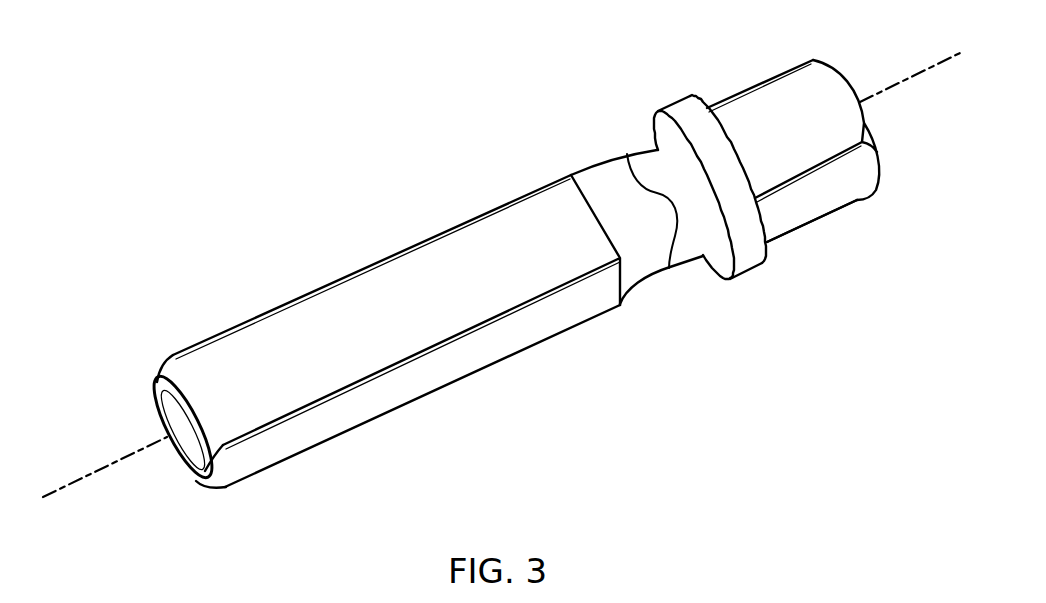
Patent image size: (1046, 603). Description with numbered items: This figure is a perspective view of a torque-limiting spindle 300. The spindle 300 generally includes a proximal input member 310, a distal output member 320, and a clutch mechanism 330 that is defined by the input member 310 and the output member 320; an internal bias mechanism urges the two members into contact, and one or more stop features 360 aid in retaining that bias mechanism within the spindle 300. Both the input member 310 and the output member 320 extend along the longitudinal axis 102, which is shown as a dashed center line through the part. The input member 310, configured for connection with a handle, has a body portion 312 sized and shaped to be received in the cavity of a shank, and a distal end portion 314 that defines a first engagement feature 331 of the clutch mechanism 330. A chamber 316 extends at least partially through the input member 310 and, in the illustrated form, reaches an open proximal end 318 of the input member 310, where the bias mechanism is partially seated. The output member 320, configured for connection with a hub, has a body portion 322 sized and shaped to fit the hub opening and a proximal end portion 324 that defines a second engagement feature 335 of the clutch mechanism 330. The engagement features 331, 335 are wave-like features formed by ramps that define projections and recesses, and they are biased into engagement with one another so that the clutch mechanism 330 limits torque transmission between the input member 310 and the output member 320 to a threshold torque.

The torque-limiting spindle 300 is at (423, 85).
The longitudinal axis 102 is at (73, 478).
The stop feature 360 is at (157, 458).
The proximal input member 310 is at (373, 238).
The body portion 312 is at (443, 388).
The distal end portion 314 is at (637, 249).
The first engagement feature 331 is at (632, 288).
The chamber 316 is at (194, 462).
The open proximal end 318 is at (175, 423).
The distal output member 320 is at (732, 63).
The body portion 322 is at (812, 221).
The proximal end portion 324 is at (710, 207).
The second engagement feature 335 is at (702, 257).
The clutch mechanism 330 is at (600, 125).